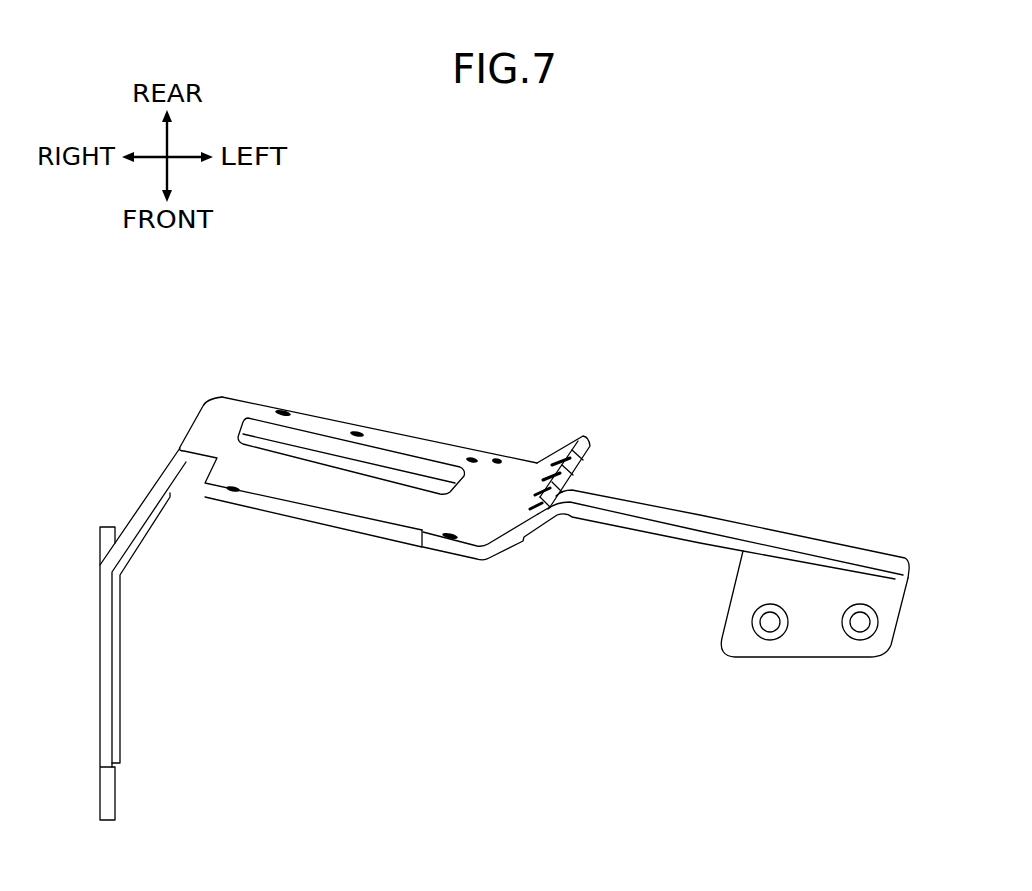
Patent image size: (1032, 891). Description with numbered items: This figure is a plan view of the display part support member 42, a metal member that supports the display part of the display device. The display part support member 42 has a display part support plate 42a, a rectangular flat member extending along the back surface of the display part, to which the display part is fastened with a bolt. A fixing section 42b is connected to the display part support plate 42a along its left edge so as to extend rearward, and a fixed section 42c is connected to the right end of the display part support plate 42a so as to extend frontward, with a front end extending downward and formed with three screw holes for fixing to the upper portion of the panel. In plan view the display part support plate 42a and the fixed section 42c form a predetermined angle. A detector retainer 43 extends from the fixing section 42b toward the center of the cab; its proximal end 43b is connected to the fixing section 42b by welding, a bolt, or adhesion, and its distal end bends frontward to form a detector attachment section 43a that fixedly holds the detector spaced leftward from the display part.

The display part support member 42 is at (281, 303).
The display part support plate 42a is at (393, 430).
The fixing section 42b is at (556, 452).
The fixed section 42c is at (123, 718).
The detector retainer 43 is at (737, 525).
The detector attachment section 43a is at (798, 658).
The proximal end 43b is at (552, 527).